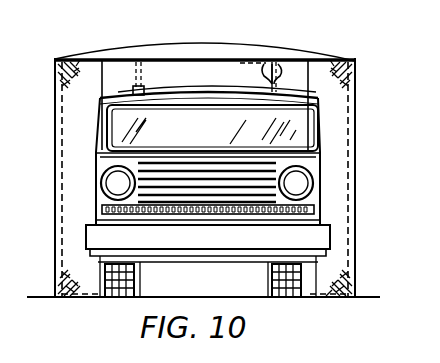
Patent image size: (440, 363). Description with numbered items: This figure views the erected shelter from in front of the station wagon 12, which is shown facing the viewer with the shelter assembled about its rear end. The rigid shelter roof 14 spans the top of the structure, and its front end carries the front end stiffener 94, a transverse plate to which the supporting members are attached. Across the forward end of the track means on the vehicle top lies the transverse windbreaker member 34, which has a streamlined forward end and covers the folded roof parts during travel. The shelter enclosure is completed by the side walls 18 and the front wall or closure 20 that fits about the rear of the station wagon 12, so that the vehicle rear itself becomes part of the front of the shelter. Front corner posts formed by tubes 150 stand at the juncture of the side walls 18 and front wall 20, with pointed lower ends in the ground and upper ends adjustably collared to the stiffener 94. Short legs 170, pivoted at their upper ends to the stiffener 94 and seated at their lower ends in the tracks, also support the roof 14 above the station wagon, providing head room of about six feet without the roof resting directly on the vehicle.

The station wagon 12 is at (185, 135).
The shelter roof 14 is at (232, 46).
The side walls 18 is at (55, 174).
The front wall or closure 20 is at (334, 100).
The windbreaker member 34 is at (204, 88).
The front end stiffener 94 is at (200, 48).
The tubes 150 is at (58, 125).
The short legs 170 is at (140, 70).